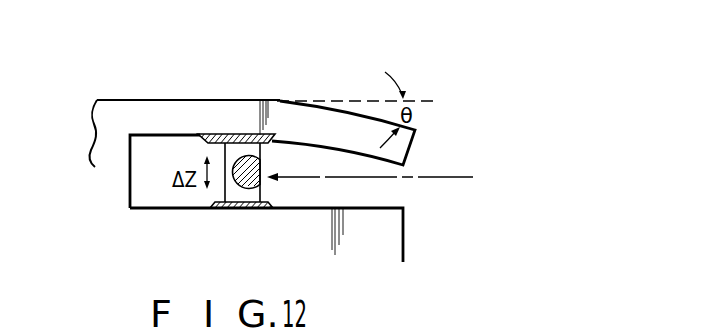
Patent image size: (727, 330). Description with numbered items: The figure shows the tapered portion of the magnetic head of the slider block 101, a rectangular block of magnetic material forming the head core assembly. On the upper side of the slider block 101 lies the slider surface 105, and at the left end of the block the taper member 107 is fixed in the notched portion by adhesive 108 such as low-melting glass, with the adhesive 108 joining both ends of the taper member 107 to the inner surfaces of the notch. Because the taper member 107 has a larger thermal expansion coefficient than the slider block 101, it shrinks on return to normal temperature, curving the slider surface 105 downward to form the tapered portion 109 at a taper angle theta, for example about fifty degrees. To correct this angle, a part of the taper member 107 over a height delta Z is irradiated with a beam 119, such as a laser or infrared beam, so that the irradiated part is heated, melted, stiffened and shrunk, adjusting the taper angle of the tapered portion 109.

The slider block 101 is at (122, 187).
The slider surface 105 is at (127, 98).
The taper member 107 is at (227, 190).
The adhesive 108 is at (199, 136).
The tapered portion 109 is at (338, 108).
The beam 119 is at (450, 178).